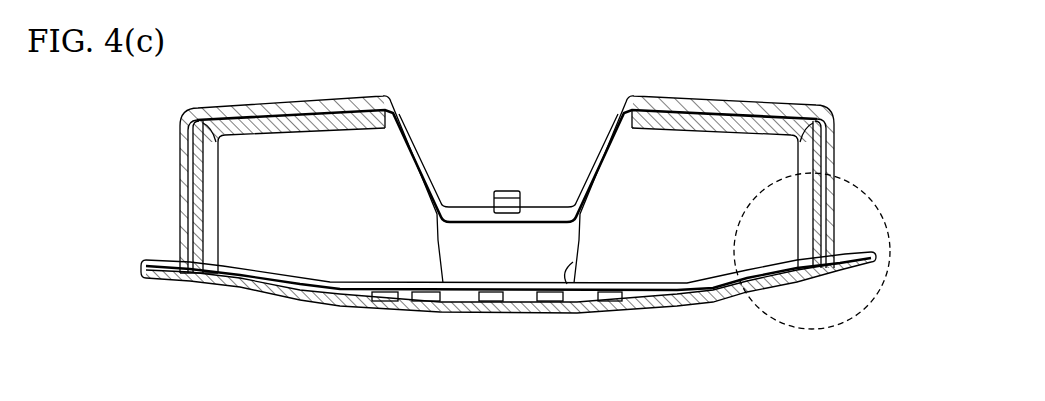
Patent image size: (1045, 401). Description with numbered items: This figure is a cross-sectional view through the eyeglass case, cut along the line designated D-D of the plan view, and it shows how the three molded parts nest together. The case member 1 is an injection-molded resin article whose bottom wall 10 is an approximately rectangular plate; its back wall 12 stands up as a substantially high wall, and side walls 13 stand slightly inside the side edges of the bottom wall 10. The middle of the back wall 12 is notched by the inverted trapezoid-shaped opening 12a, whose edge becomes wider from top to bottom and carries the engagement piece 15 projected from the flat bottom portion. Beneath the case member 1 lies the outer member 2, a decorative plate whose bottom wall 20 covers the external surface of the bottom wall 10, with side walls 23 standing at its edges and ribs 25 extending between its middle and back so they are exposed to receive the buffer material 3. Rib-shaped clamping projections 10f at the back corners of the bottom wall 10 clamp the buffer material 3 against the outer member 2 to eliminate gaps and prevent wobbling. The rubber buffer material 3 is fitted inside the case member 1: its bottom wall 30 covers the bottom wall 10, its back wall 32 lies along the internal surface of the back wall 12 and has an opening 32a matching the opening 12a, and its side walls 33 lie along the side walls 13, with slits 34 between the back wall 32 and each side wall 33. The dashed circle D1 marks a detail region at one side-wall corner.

The case member 1 is at (470, 221).
The bottom wall 10 is at (470, 221).
The outer member 2 is at (484, 322).
The bottom wall 20 is at (484, 322).
The buffer material 3 is at (508, 325).
The bottom wall 30 is at (399, 293).
The back wall 12 is at (499, 188).
The opening 12a is at (611, 137).
The side wall 13 is at (183, 203).
The engagement piece 15 is at (507, 191).
The side wall 23 is at (146, 267).
The rib 25 is at (664, 294).
The back wall 32 is at (501, 209).
The opening 32a is at (571, 294).
The side wall 33 is at (190, 160).
The slit 34 is at (204, 123).
The clamping projection 10f is at (182, 284).
The detail region D1 is at (879, 205).